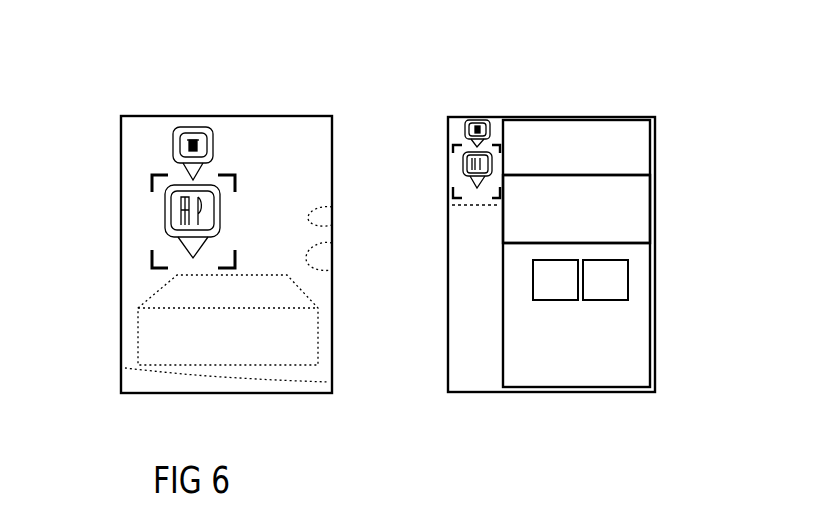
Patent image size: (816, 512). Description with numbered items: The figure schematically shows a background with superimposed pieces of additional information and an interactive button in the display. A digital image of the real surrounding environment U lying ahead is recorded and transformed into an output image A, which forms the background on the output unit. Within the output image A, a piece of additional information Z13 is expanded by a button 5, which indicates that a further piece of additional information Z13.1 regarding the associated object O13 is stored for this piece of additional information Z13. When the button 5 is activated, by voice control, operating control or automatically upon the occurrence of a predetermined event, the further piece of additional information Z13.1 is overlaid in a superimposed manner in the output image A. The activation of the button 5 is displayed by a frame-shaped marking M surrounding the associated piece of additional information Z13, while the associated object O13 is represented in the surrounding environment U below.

The button 5 is at (184, 131).
The output image A is at (274, 115).
The frame-shaped marking M is at (152, 181).
The piece of additional information Z13 is at (165, 211).
The further piece of additional information Z13.1 is at (633, 202).
The real surrounding environment U is at (136, 287).
The associated object O13 is at (151, 337).